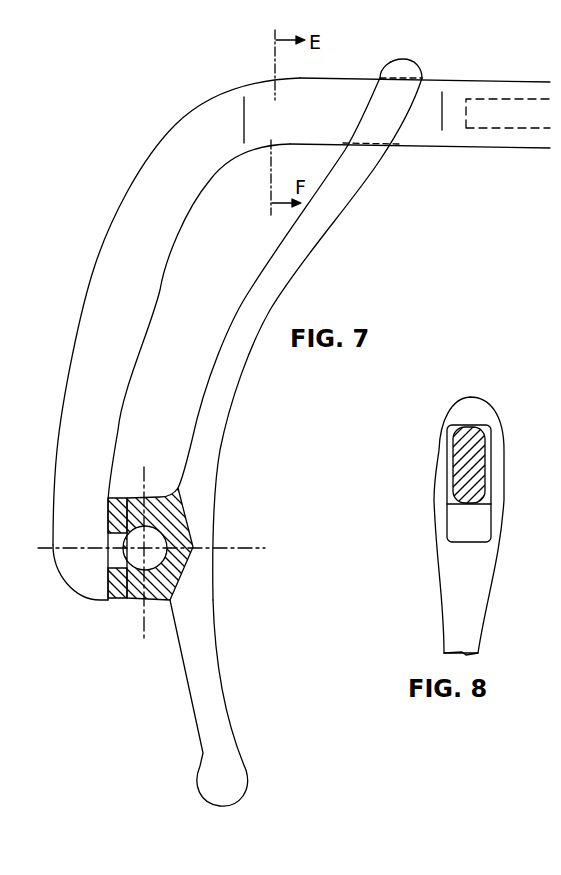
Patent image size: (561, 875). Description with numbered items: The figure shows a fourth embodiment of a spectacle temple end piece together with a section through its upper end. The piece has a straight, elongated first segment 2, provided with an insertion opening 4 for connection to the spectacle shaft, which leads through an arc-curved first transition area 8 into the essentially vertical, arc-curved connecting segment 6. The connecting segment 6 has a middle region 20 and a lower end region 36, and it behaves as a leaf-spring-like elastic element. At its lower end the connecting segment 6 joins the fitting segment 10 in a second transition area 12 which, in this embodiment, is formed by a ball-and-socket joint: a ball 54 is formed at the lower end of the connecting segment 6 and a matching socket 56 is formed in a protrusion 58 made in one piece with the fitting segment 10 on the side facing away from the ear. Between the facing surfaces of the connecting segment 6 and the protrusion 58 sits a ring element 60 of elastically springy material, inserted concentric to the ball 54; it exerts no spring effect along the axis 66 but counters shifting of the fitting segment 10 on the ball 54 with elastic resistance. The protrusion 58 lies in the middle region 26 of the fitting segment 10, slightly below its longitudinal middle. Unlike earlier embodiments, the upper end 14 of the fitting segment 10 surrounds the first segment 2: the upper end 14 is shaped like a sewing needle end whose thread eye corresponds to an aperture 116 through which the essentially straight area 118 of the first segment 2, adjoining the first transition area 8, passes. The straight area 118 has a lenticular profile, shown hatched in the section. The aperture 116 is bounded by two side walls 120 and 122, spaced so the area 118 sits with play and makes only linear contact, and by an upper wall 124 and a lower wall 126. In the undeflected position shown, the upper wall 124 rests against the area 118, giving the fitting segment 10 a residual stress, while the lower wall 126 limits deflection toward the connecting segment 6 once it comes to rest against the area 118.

In FIG. 7, the first segment 2 is at (372, 66).
In FIG. 7, the insertion opening 4 is at (478, 100).
In FIG. 7, the connecting segment 6 is at (93, 241).
In FIG. 7, the first transition area 8 is at (188, 113).
In FIG. 7, the fitting segment 10 is at (242, 419).
In FIG. 7, the second transition area 12 is at (80, 607).
In FIG. 7, the upper end 14 is at (420, 155).
In FIG. 8, the upper end 14 is at (473, 383).
In FIG. 7, the middle region 20 is at (100, 280).
In FIG. 7, the middle region 26 is at (212, 465).
In FIG. 7, the lower end region 36 is at (72, 460).
In FIG. 7, the ball 54 is at (135, 563).
In FIG. 7, the socket 56 is at (163, 528).
In FIG. 7, the protrusion 58 is at (175, 575).
In FIG. 7, the ring element 60 is at (115, 497).
In FIG. 7, the axis 66 is at (68, 548).
In FIG. 8, the aperture 116 is at (455, 519).
In FIG. 7, the straight area 118 is at (490, 180).
In FIG. 8, the straight area 118 is at (453, 452).
In FIG. 8, the side wall 120 is at (455, 508).
In FIG. 8, the side wall 122 is at (440, 482).
In FIG. 8, the upper wall 124 is at (468, 407).
In FIG. 8, the lower wall 126 is at (463, 548).